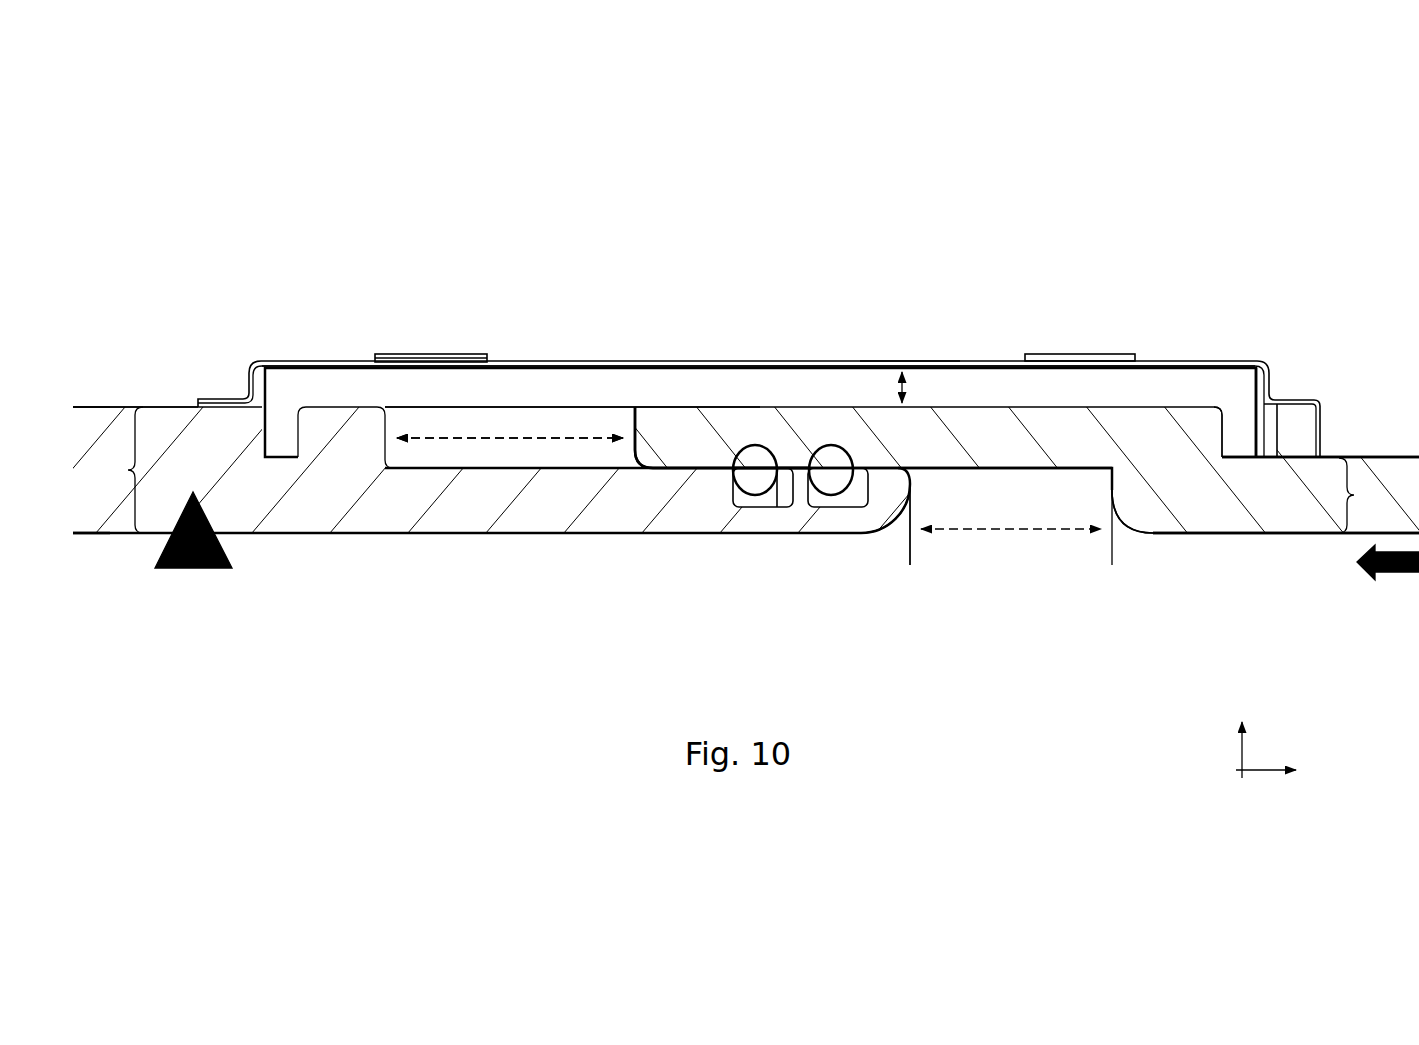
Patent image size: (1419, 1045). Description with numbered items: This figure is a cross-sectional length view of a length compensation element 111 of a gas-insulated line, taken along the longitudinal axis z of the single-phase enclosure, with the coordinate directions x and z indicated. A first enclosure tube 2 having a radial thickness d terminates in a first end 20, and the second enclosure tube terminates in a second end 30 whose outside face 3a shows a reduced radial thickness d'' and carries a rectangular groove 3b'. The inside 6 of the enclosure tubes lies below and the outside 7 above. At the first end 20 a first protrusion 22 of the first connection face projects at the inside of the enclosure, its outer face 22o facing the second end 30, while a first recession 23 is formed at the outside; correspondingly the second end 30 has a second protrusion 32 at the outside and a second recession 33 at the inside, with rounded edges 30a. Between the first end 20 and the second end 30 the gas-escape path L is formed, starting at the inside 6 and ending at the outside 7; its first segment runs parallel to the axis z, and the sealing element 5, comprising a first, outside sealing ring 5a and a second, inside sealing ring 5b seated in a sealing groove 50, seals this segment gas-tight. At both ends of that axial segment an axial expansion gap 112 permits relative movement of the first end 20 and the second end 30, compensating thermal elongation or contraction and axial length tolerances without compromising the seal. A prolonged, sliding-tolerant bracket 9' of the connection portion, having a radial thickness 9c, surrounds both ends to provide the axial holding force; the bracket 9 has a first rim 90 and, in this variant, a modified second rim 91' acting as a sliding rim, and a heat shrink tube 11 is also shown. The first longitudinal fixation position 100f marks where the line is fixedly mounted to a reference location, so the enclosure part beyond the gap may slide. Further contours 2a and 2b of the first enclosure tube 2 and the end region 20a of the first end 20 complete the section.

The length compensation element 111 is at (250, 313).
The first rim of bracket 90 is at (345, 450).
The bracket 9 is at (759, 326).
The prolonged bracket 9' is at (758, 329).
The thickness of bracket 9c is at (903, 395).
The heat shrink tube 11 is at (855, 366).
The second protrusion of second connection face 32 is at (663, 430).
The outer face of first protrusion 22o is at (690, 466).
The second recession of second connection face 33 is at (968, 508).
The rounded edges 30a is at (1128, 523).
The outside face of second enclosure tube 3a is at (1377, 456).
The left support portion 2a is at (160, 404).
The outside of the enclosure tubes 7 is at (91, 385).
The inside of the enclosure tubes 6 is at (91, 558).
The radial thickness of the enclosure tubes d is at (124, 470).
The reduced radial thickness of enclosure tube d'' is at (1358, 495).
The first longitudinal fixation position 100f is at (201, 570).
The first enclosure tube 2 is at (316, 508).
The first end of first enclosure tube 20 is at (345, 535).
The boss 2b is at (298, 458).
The axial expansion gap 112 is at (523, 443).
The first recession of first connection face 23 is at (598, 455).
The first protrusion of first connection face 22 is at (648, 535).
The sealing groove 50 is at (812, 511).
The sealing element 5 is at (784, 535).
The first sealing ring 5a is at (757, 475).
The second sealing ring 5b is at (828, 475).
The rounded end of lower body 20a is at (900, 515).
The second indenture 3b' is at (1141, 514).
The modified second rim 91' is at (1210, 497).
The second end of second enclosure tube 30 is at (1315, 535).
The gas-escape path L is at (792, 465).
The x axis x is at (1251, 748).
The longitudinal axis z is at (1266, 783).